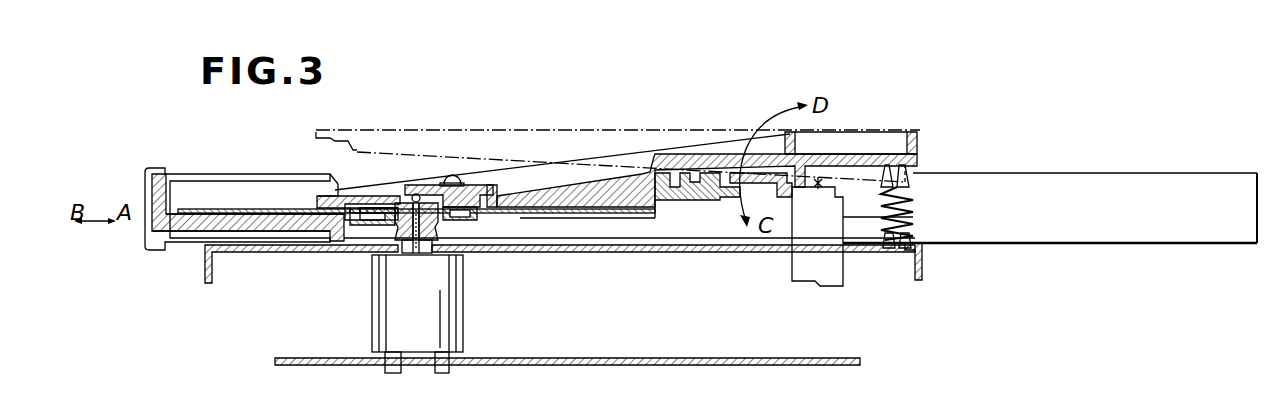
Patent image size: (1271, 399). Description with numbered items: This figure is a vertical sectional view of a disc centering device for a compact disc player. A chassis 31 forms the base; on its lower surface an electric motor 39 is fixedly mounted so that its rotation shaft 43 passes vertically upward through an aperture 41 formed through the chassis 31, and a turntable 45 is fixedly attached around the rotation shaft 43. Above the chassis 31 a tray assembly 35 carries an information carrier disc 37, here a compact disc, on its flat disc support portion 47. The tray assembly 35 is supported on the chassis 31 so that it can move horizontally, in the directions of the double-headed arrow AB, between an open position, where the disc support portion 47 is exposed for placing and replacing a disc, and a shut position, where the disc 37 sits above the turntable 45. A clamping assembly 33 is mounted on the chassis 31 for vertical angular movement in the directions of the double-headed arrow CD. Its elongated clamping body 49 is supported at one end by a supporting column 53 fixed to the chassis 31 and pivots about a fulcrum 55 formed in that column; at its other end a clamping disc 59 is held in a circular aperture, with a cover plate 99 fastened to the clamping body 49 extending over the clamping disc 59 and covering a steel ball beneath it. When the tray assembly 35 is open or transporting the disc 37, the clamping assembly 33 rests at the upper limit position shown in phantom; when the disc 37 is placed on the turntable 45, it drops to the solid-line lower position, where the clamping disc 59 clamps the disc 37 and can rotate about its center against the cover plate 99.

The chassis 31 is at (302, 254).
The clamping assembly 33 is at (707, 130).
The tray assembly 35 is at (208, 164).
The information carrier disc 37 is at (241, 209).
The electric motor 39 is at (463, 318).
The aperture 41 is at (428, 252).
The rotation shaft 43 is at (432, 232).
The turntable 45 is at (376, 220).
The disc support portion 47 is at (279, 220).
The clamping body 49 is at (612, 156).
The supporting column 53 is at (791, 232).
The fulcrum 55 is at (818, 190).
The clamping disc 59 is at (366, 196).
The cover plate 99 is at (481, 185).